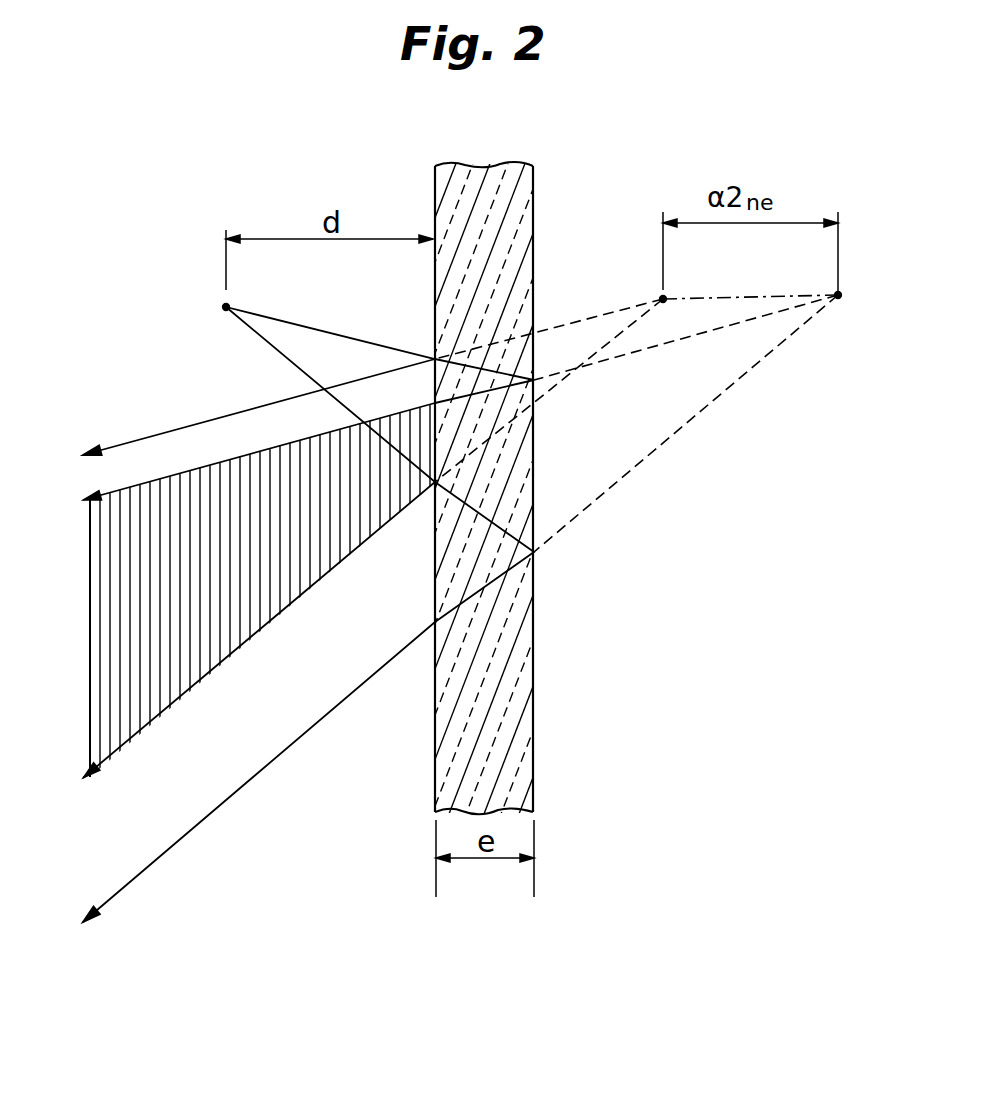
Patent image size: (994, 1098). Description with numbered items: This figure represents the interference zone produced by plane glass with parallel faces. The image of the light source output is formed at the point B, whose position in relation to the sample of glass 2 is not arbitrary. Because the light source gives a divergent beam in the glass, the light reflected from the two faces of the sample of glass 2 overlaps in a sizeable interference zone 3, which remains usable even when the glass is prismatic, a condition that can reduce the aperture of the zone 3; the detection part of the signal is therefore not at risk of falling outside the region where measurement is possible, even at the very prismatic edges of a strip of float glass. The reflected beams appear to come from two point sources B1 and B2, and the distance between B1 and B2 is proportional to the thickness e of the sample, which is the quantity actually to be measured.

The sample of glass 2 is at (525, 192).
The interference zone 3 is at (107, 642).
The image point of the light source output B is at (226, 307).
The first apparent point source B1 is at (663, 299).
The second apparent point source B2 is at (840, 300).